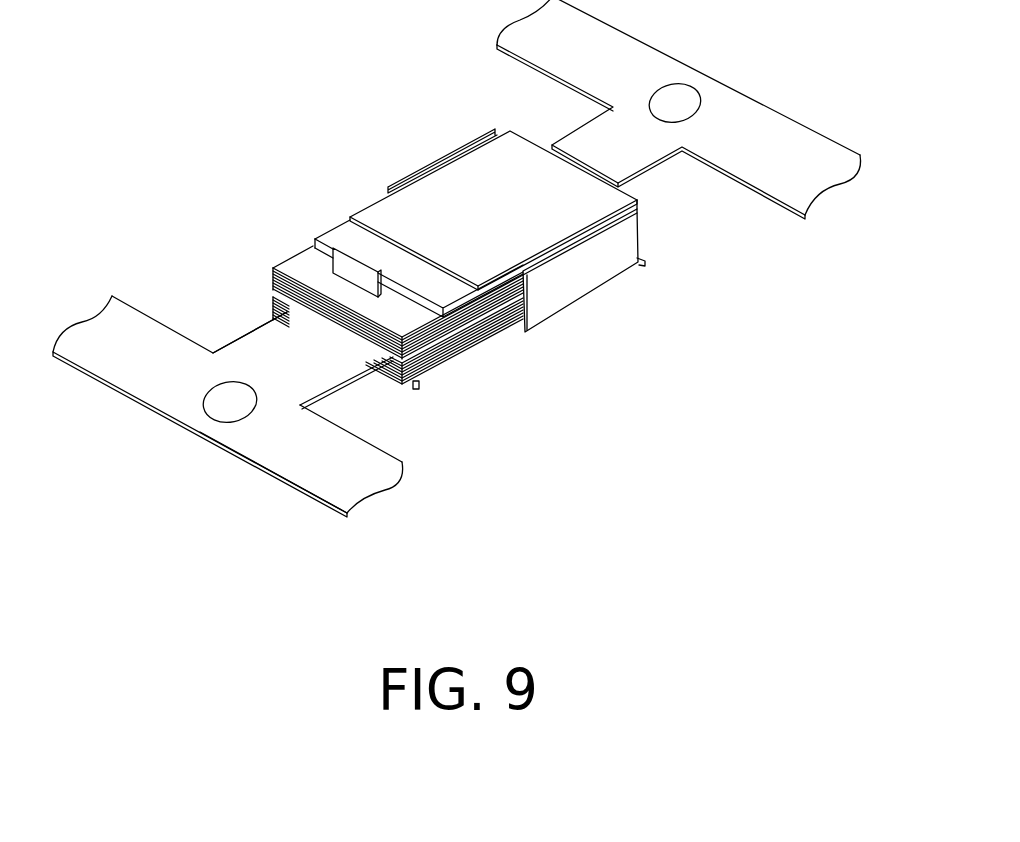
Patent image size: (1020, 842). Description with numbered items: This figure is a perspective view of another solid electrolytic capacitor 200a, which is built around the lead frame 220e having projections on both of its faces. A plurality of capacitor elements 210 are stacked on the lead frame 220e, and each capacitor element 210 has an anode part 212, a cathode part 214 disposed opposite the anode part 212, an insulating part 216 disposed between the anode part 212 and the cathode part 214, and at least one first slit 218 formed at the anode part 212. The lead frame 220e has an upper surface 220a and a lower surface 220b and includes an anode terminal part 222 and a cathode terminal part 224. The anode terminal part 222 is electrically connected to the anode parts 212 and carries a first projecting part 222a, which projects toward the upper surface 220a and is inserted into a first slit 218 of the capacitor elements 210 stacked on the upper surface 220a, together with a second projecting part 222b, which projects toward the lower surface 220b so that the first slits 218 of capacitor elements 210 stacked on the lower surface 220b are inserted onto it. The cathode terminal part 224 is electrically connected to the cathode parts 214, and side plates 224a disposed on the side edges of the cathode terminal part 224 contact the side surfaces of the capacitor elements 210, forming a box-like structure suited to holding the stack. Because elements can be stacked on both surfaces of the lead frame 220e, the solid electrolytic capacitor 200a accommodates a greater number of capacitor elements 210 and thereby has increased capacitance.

The solid electrolytic capacitor 200a is at (906, 574).
The capacitor element 210 is at (321, 113).
The anode part 212 is at (336, 282).
The cathode part 214 is at (442, 220).
The insulating part 216 is at (332, 233).
The first slit 218 is at (273, 296).
The upper surface 220a is at (285, 455).
The lower surface 220b is at (325, 502).
The lead frame 220e is at (712, 483).
The anode terminal part 222 is at (368, 480).
The first projecting part 222a is at (382, 298).
The second projecting part 222b is at (416, 389).
The cathode terminal part 224 is at (773, 168).
The side plate 224a is at (496, 134).